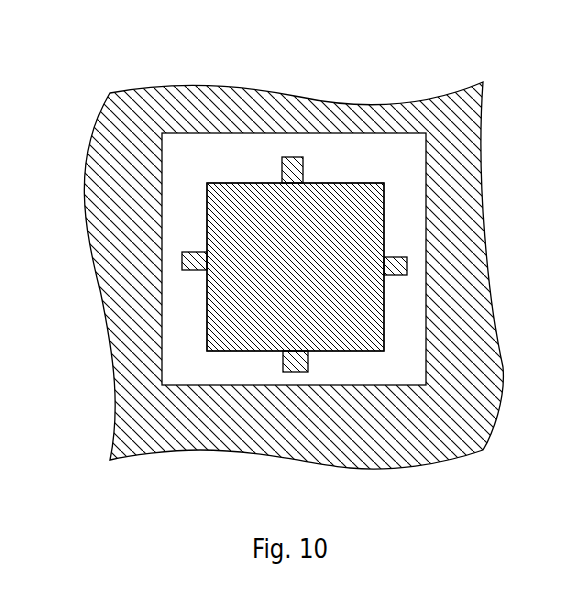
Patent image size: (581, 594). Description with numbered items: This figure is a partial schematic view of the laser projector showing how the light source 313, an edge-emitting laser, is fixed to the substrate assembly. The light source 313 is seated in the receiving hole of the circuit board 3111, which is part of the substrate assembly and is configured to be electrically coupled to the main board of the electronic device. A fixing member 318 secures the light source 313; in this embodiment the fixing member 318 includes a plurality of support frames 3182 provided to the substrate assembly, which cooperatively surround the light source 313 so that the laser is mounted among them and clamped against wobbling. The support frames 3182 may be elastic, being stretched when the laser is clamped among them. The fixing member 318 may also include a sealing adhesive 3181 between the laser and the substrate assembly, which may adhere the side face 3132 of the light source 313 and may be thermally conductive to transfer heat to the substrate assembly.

The circuit board 3111 is at (178, 100).
The fixing member 318 is at (313, 113).
The sealing adhesive 3181 is at (288, 158).
The support frame 3182 is at (182, 254).
The side face 3132 is at (207, 321).
The light source 313 is at (365, 328).